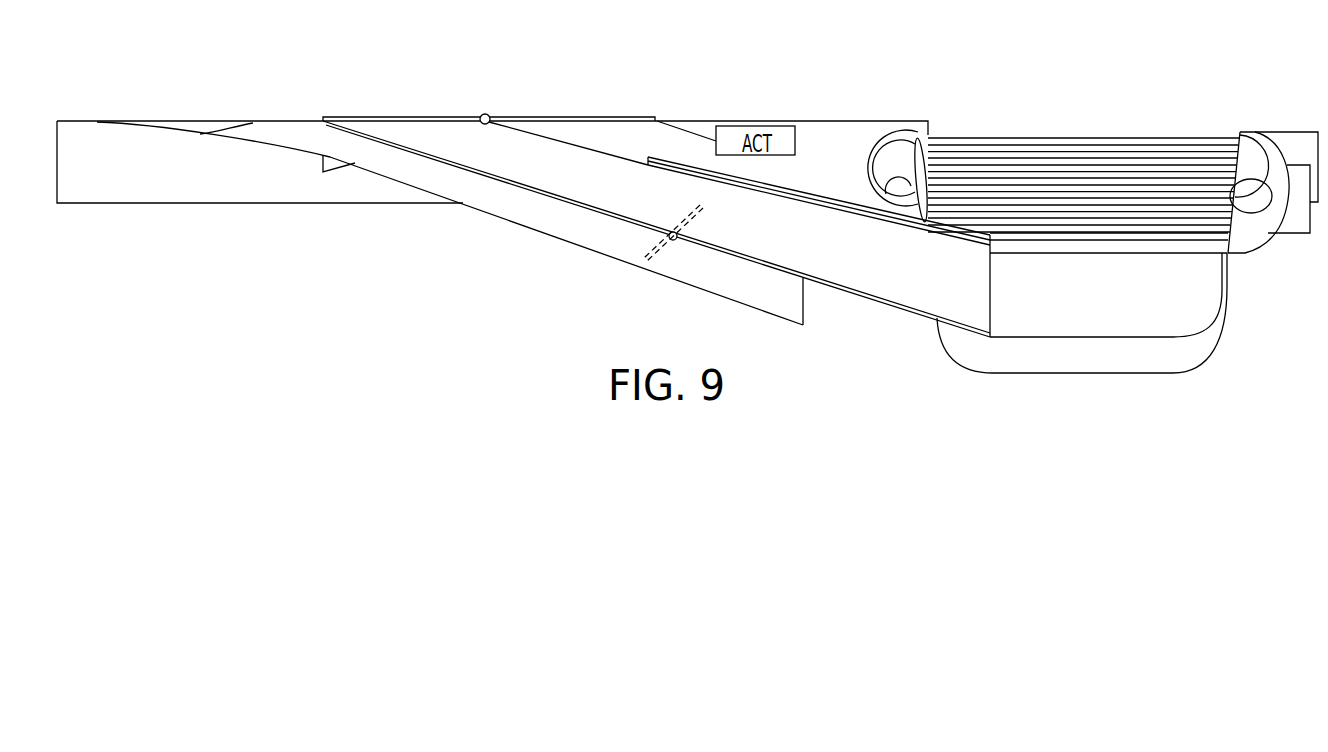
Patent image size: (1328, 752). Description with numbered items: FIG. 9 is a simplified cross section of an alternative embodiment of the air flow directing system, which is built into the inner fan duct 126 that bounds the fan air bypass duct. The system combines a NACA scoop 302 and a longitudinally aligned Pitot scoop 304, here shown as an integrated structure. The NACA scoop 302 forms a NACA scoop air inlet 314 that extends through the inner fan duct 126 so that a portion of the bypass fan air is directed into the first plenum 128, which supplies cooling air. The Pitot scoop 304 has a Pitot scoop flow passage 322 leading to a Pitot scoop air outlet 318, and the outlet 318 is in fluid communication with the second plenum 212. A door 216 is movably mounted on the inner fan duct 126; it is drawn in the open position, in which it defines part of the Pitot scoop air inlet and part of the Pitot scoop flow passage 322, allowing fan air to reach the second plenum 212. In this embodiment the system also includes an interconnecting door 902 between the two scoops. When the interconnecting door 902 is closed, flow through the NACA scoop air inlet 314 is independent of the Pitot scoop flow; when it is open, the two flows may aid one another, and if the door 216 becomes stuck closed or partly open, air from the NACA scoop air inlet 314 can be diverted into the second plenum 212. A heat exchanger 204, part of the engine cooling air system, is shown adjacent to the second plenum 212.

The inner fan duct 126 is at (99, 121).
The first plenum 128 is at (847, 370).
The NACA scoop 302 is at (212, 113).
The Pitot scoop 304 is at (390, 102).
The NACA scoop air inlet 314 is at (321, 141).
The Pitot scoop flow passage 322 is at (416, 121).
The door 216 is at (475, 105).
The interconnecting door 902 is at (709, 245).
The Pitot scoop air outlet 318 is at (990, 288).
The heat exchanger 204 is at (1087, 138).
The second plenum 212 is at (1105, 318).